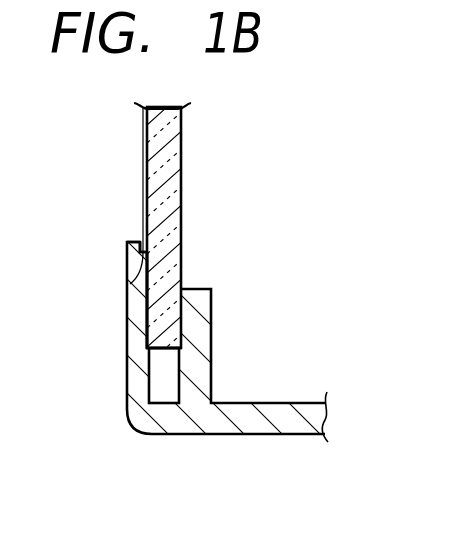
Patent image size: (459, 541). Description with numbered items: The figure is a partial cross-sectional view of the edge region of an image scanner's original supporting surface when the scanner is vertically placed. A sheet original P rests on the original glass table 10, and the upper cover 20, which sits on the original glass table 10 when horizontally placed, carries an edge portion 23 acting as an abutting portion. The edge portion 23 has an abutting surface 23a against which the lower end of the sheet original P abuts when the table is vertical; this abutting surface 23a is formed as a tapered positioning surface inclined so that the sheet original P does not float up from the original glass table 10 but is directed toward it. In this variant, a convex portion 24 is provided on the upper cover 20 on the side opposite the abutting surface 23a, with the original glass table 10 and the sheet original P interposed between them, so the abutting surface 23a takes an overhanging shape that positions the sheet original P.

The original glass table 10 is at (182, 210).
The sheet original P is at (146, 146).
The upper cover 20 is at (292, 425).
The convex portion 24 is at (137, 243).
The edge portion 23 is at (128, 265).
The abutting surface 23a is at (128, 295).